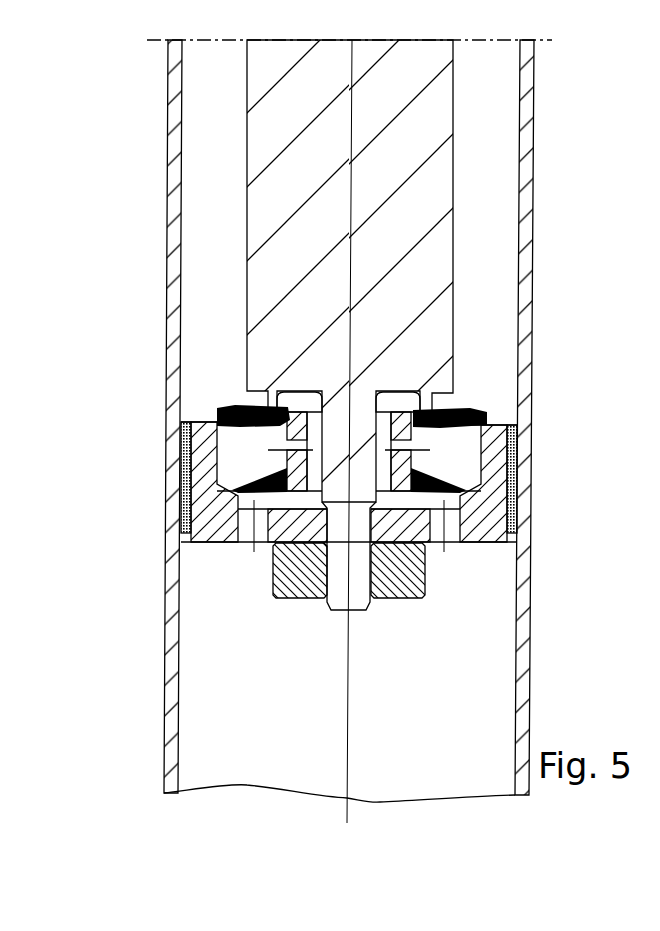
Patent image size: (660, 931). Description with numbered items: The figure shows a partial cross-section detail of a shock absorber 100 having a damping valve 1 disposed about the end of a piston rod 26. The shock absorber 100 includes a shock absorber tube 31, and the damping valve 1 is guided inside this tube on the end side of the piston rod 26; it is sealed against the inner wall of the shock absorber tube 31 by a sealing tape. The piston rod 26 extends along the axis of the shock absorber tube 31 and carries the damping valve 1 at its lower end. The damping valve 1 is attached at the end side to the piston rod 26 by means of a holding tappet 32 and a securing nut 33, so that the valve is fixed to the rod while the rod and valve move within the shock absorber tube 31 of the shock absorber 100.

The shock absorber 100 is at (130, 135).
The damping valve 1 is at (209, 381).
The piston rod 26 is at (423, 203).
The shock absorber tube 31 is at (525, 333).
The holding tappet 32 is at (357, 558).
The securing nut 33 is at (277, 580).